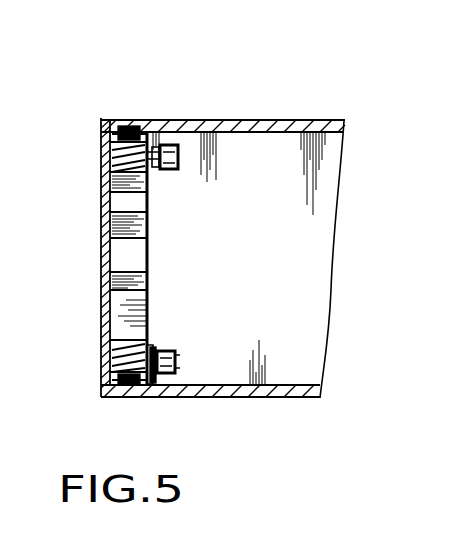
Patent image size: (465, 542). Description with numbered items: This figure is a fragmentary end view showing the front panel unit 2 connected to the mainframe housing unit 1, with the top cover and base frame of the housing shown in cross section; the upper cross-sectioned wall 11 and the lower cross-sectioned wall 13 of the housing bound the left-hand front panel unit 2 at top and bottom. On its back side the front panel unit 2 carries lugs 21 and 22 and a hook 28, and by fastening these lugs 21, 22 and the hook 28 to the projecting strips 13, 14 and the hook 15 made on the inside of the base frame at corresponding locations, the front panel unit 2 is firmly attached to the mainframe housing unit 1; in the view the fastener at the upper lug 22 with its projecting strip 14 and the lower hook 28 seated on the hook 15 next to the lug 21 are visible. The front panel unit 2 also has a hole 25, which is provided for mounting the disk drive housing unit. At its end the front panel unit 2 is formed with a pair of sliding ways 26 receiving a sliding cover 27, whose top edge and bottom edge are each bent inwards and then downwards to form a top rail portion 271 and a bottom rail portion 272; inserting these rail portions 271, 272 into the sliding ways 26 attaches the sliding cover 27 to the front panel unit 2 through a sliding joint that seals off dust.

The mainframe housing unit 1 is at (340, 247).
The front panel unit 2 is at (100, 152).
The top wall 11 is at (246, 120).
The projecting strip 13 is at (194, 398).
The projecting strip 14 is at (165, 170).
The hook 15 is at (148, 345).
The lug 21 is at (184, 365).
The lug 22 is at (180, 158).
The hole 25 is at (100, 284).
The sliding ways 26 is at (141, 127).
The sliding cover 27 is at (100, 216).
The hook 28 is at (156, 349).
The top rail portion 271 is at (129, 121).
The bottom rail portion 272 is at (125, 396).